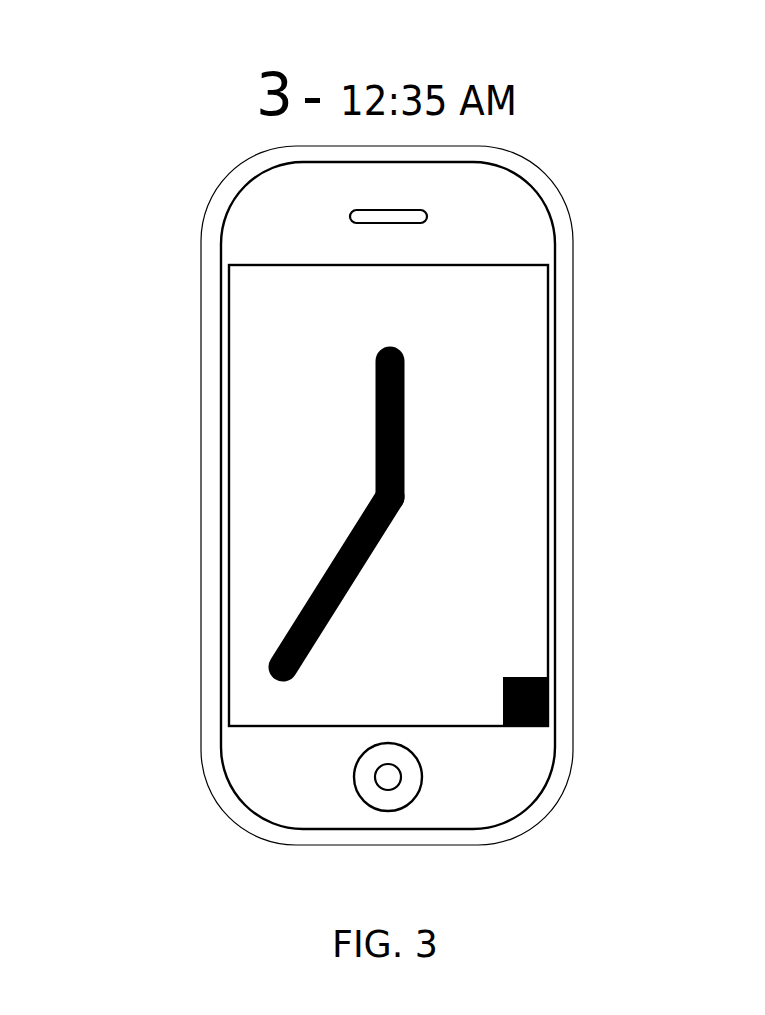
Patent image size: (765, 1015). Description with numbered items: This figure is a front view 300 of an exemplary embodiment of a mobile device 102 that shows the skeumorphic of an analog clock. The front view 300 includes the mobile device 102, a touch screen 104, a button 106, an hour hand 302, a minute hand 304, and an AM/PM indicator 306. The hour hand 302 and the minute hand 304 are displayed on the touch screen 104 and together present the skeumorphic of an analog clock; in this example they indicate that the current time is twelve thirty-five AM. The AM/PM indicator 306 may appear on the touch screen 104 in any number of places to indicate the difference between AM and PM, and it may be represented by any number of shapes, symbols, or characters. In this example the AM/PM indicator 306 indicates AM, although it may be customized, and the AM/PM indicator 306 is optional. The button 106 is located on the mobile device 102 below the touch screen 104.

The front view 300 is at (152, 77).
The mobile device 102 is at (208, 217).
The touch screen 104 is at (265, 353).
The hour hand 302 is at (370, 428).
The minute hand 304 is at (245, 582).
The AM/PM indicator 306 is at (587, 700).
The button 106 is at (372, 772).